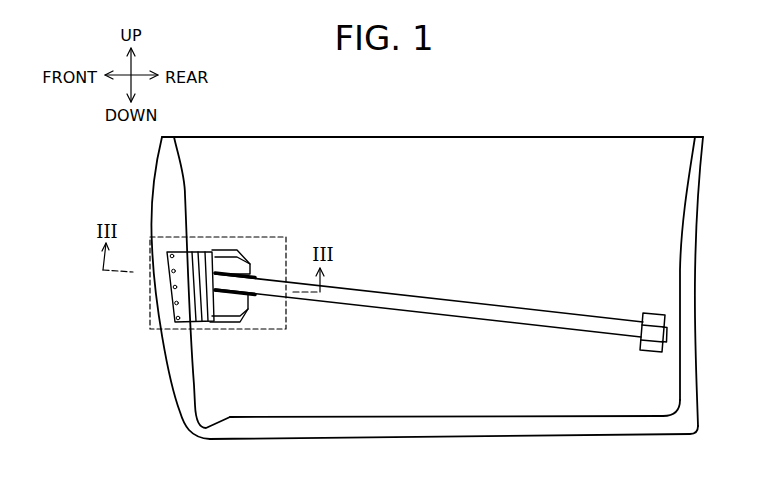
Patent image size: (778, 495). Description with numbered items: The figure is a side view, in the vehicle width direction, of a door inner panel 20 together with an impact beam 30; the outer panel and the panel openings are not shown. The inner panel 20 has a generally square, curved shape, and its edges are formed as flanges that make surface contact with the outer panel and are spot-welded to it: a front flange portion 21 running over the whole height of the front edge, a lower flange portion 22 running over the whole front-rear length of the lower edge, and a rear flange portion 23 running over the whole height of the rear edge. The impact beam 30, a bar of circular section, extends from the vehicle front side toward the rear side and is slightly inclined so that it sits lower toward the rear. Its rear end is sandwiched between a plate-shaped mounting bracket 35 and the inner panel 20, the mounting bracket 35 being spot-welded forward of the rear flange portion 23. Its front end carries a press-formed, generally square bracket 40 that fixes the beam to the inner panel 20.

The inner panel 20 is at (430, 287).
The front flange portion 21 is at (161, 350).
The lower flange portion 22 is at (531, 434).
The rear flange portion 23 is at (694, 285).
The impact beam 30 is at (505, 306).
The mounting bracket 35 is at (648, 313).
The bracket 40 is at (242, 323).